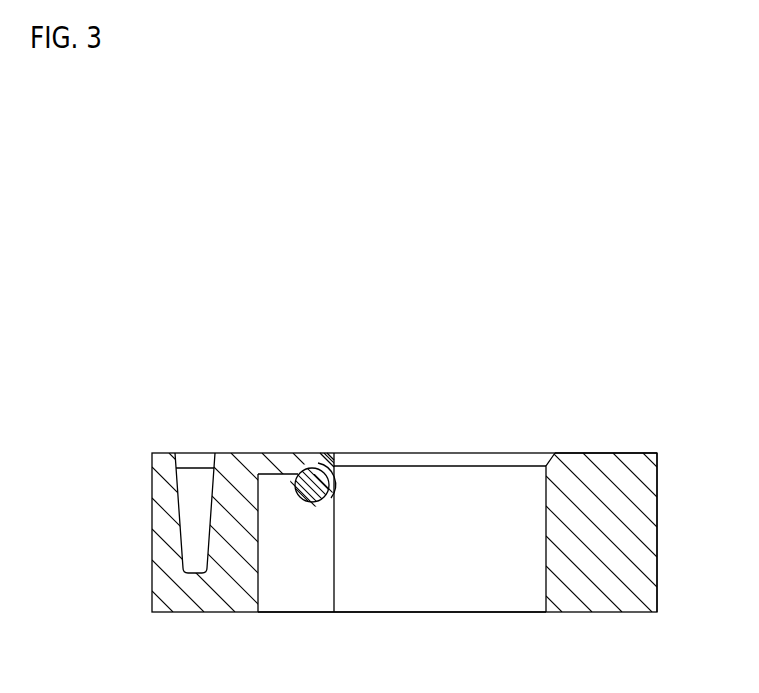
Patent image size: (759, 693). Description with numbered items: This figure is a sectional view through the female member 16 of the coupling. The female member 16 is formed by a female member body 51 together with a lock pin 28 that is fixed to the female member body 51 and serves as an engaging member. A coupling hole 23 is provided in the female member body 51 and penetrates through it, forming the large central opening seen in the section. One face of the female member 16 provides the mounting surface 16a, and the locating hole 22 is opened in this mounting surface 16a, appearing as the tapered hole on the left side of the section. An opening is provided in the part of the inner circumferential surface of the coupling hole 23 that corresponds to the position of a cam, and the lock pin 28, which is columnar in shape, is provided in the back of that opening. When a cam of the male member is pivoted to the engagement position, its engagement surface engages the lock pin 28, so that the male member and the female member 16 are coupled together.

The female member 16 is at (645, 447).
The mounting surface 16a is at (600, 452).
The female member body 51 is at (658, 528).
The locating hole 22 is at (190, 523).
The lock pin 28 is at (337, 462).
The coupling hole 23 is at (468, 600).